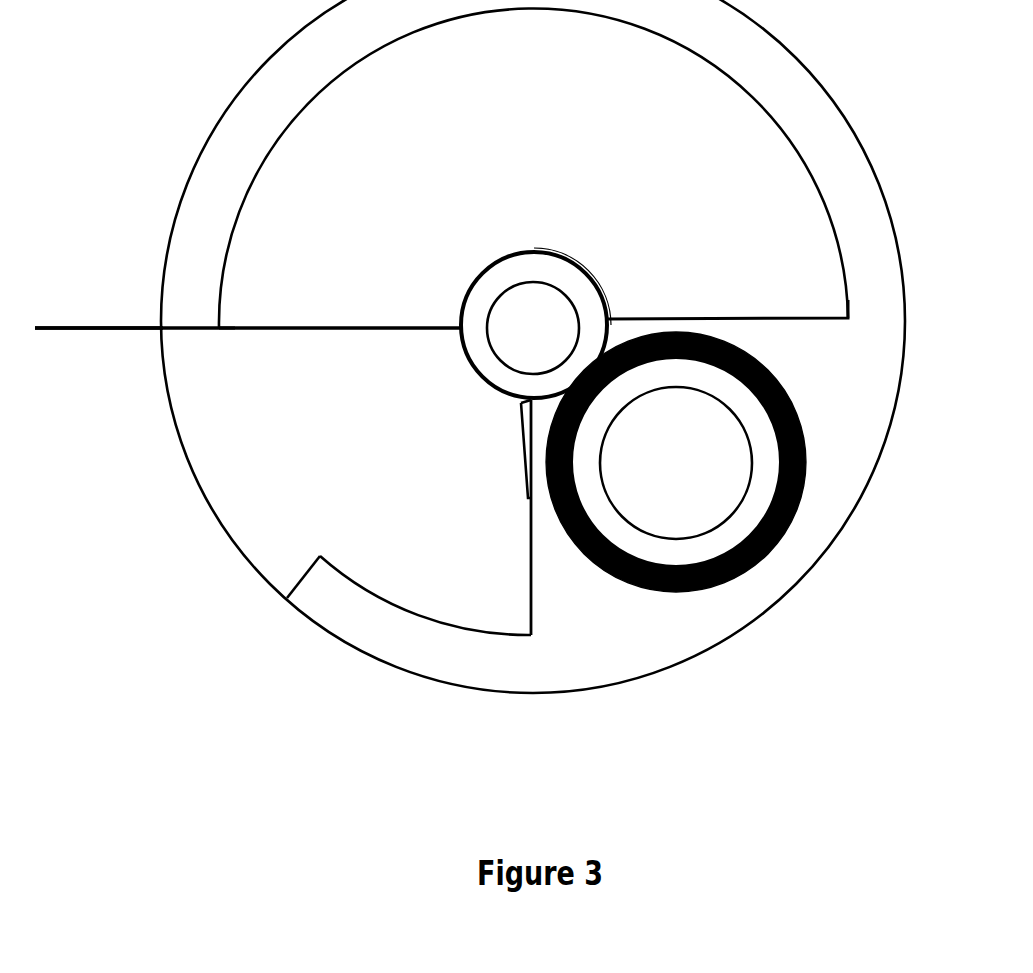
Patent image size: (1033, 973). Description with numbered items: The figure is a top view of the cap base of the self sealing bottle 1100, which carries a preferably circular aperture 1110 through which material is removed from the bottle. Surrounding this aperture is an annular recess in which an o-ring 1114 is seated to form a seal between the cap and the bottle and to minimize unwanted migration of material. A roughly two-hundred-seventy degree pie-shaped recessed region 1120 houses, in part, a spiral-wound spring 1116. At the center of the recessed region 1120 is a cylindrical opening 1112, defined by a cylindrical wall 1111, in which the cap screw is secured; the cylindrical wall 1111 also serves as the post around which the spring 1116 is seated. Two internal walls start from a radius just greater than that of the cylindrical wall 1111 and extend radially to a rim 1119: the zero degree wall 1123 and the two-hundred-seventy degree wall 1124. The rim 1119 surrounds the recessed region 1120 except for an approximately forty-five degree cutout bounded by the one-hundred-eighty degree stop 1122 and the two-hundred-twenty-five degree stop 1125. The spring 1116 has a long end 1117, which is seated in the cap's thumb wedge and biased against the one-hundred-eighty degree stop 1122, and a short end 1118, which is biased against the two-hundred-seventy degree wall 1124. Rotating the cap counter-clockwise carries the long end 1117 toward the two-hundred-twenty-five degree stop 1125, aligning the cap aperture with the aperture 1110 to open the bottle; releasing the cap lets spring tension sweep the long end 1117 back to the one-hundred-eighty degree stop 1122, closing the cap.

The housing 1100 is at (802, 568).
The aperture 1110 is at (676, 462).
The cylindrical wall 1111 is at (487, 290).
The cylindrical opening 1112 is at (537, 283).
The o-ring 1114 is at (773, 375).
The spring 1116 is at (310, 330).
The long end 1117 is at (50, 332).
The short end 1118 is at (528, 470).
The rim 1119 is at (212, 135).
The recessed region 1120 is at (550, 110).
The 180 degree stop 1122 is at (220, 323).
The 0 degree wall 1123 is at (718, 317).
The 270 degree wall 1124 is at (532, 522).
The 225 degree stop 1125 is at (292, 570).